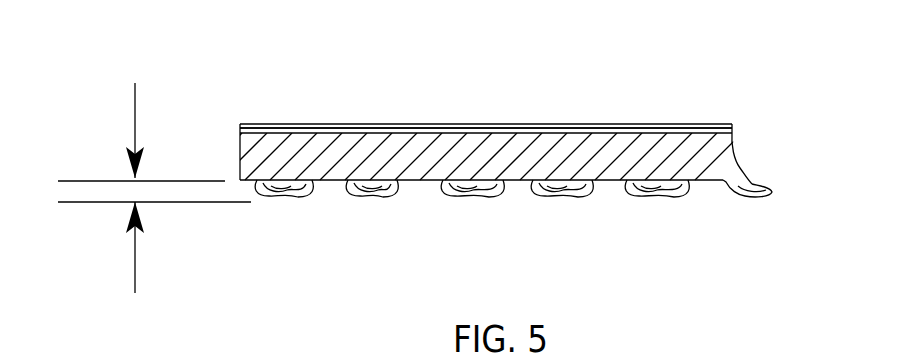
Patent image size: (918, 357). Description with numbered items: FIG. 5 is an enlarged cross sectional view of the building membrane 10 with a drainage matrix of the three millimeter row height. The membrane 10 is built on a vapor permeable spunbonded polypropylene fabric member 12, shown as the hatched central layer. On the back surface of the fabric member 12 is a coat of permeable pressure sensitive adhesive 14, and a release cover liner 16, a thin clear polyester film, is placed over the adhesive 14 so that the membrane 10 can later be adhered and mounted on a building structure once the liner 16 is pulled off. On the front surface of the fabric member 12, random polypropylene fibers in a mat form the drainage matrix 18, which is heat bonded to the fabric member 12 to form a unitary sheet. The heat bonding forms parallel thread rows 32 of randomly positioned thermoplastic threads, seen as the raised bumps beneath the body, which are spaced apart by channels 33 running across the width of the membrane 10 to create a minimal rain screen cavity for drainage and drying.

The building membrane 10 is at (360, 84).
The spunbonded polypropylene fabric member 12 is at (240, 152).
The permeable pressure sensitive adhesive 14 is at (725, 128).
The release cover liner 16 is at (703, 126).
The drainage matrix 18 is at (440, 200).
The thread rows 32 is at (654, 196).
The channels 33 is at (603, 192).